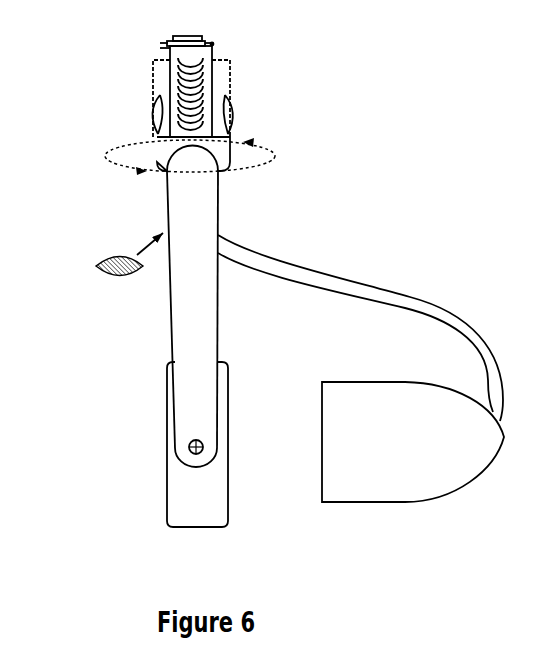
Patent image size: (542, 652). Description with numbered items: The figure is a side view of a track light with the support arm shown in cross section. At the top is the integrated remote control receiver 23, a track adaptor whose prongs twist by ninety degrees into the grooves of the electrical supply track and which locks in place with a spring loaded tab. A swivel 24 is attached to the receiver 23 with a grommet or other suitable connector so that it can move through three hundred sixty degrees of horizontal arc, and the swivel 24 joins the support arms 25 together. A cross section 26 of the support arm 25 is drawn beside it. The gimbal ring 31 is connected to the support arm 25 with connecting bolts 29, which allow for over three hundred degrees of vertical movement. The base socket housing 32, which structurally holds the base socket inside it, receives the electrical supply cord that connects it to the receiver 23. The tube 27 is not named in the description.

The integrated remote control receiver 23 is at (238, 89).
The swivel 24 is at (233, 153).
The support arm 25 is at (223, 212).
The cross section 26 is at (95, 266).
The curved tube 27 is at (499, 345).
The connecting bolt 29 is at (188, 448).
The gimbal ring 31 is at (167, 498).
The base socket housing 32 is at (373, 503).